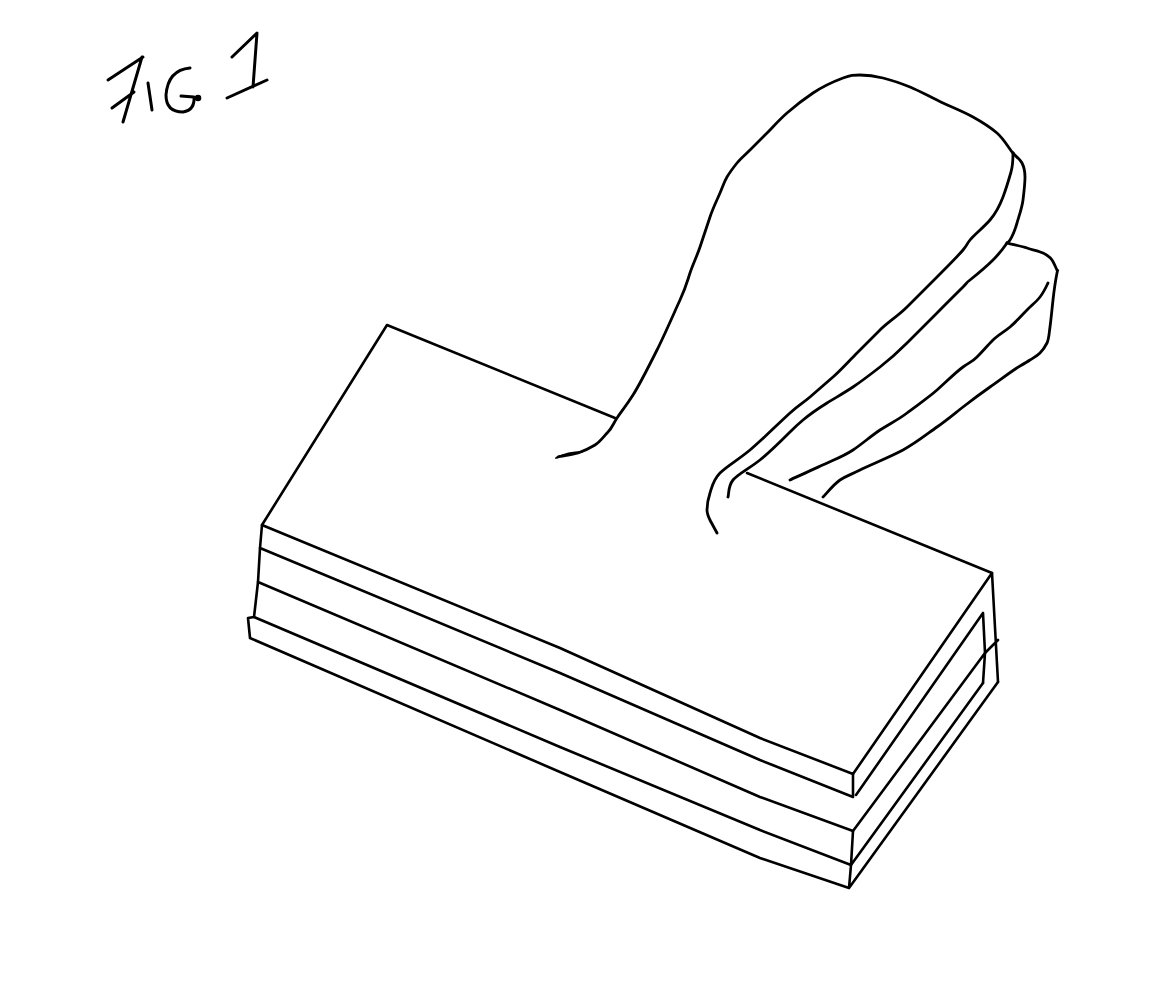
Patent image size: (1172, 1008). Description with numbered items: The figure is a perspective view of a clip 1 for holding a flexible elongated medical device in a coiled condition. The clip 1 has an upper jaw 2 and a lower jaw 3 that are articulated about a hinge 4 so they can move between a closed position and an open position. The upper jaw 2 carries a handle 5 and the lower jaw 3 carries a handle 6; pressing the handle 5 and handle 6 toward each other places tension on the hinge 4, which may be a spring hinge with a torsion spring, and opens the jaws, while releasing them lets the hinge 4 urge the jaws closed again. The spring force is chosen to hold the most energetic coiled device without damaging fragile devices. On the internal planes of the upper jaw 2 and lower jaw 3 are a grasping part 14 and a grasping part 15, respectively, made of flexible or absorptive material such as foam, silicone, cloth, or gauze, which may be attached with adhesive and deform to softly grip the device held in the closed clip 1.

The clip 1 is at (353, 807).
The upper jaw 2 is at (342, 470).
The lower jaw 3 is at (343, 667).
The hinge 4 is at (767, 480).
The handle 5 is at (735, 267).
The handle 6 is at (1007, 262).
The grasping part 14 is at (258, 563).
The grasping part 15 is at (252, 616).